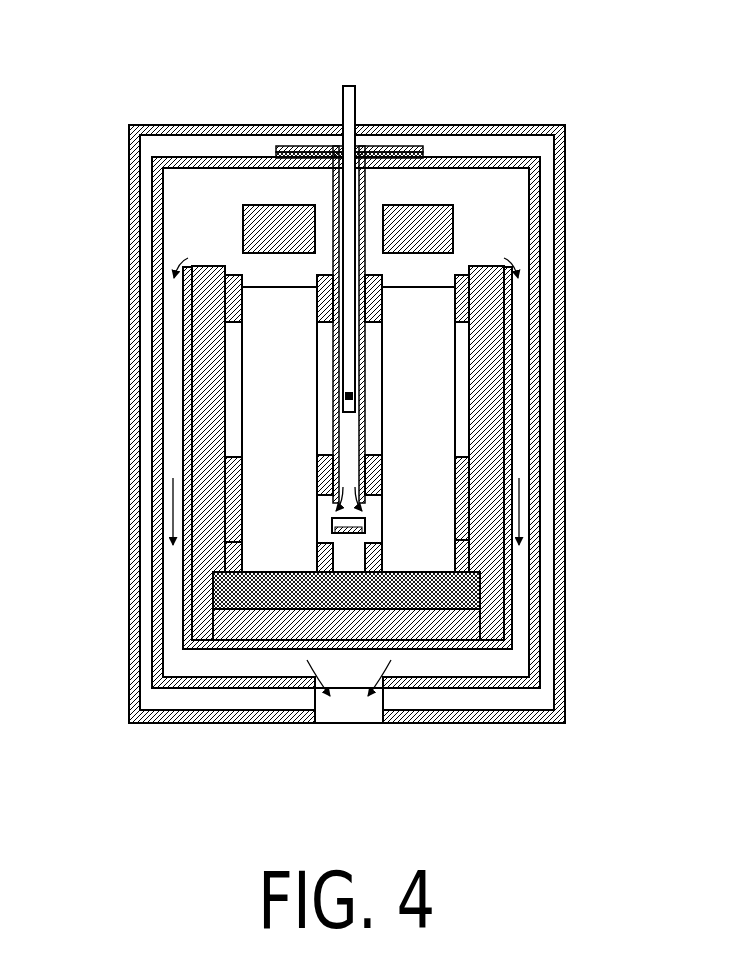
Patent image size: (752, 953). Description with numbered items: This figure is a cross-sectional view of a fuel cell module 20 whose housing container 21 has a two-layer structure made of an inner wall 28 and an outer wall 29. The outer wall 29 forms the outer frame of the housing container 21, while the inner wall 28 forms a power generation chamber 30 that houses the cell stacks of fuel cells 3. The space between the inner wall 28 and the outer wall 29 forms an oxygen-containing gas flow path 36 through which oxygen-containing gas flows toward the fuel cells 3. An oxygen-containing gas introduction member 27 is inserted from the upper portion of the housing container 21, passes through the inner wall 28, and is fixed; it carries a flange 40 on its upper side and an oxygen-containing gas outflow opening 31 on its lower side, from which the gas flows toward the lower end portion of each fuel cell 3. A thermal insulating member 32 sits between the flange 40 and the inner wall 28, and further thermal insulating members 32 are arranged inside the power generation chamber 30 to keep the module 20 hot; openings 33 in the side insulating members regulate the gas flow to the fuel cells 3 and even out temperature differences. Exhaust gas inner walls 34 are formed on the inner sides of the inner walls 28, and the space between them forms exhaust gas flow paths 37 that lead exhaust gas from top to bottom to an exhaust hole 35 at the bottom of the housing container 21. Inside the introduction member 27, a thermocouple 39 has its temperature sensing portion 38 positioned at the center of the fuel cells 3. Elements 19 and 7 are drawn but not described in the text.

The module 20 is at (134, 98).
The housing container 21 is at (127, 127).
The outer wall 29 is at (502, 128).
The power generation chamber 30 is at (188, 185).
The inner wall 28 is at (540, 237).
The heater block 19 is at (445, 205).
The flange 40 is at (383, 148).
The thermal insulating member 32 is at (422, 150).
The opening 33 is at (238, 417).
The base plate 7 is at (480, 592).
The fuel cell 3 is at (262, 290).
The oxygen-containing gas introduction member 27 is at (333, 187).
The thermocouple 39 is at (355, 117).
The temperature sensing portion 38 is at (347, 395).
The oxygen-containing gas outflow opening 31 is at (336, 506).
The oxygen-containing gas flow path 36 is at (145, 495).
The exhaust gas flow path 37 is at (175, 587).
The exhaust gas inner wall 34 is at (508, 322).
The exhaust hole 35 is at (318, 697).